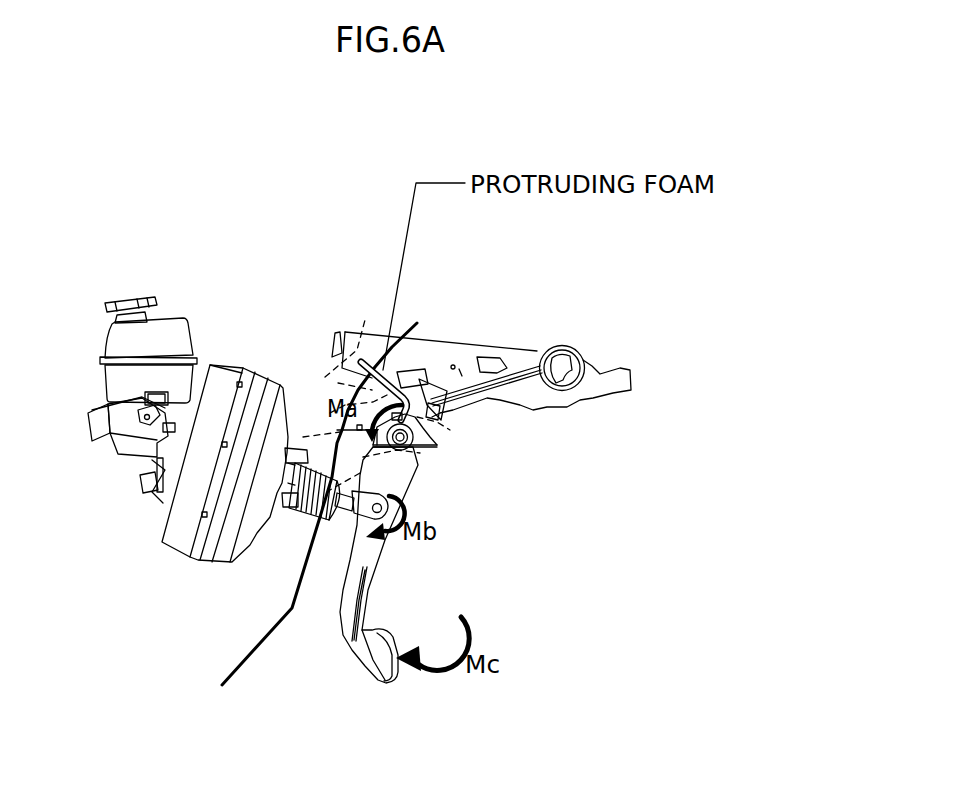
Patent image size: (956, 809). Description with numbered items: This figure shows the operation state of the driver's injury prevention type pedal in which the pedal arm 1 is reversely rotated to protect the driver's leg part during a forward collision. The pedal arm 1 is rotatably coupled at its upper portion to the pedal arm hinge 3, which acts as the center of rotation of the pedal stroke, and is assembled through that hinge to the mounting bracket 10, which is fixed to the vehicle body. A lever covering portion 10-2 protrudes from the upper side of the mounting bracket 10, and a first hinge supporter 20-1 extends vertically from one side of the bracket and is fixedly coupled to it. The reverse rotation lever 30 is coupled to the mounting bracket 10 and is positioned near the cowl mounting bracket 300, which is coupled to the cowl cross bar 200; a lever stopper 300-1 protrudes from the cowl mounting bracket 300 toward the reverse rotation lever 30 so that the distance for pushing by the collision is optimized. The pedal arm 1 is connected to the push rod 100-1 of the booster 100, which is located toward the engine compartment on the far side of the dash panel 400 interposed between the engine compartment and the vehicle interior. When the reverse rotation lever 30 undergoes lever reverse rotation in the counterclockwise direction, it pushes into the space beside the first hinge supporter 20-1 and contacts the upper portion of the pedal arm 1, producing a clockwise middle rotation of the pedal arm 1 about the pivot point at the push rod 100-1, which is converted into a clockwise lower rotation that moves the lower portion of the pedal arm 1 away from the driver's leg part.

The pedal arm 1 is at (357, 605).
The pedal arm hinge 3 is at (434, 437).
The mounting bracket 10 is at (320, 430).
The lever covering portion 10-2 is at (332, 342).
The first hinge supporter 20-1 is at (437, 447).
The reverse rotation lever 30 is at (570, 408).
The booster 100 is at (188, 493).
The push rod 100-1 is at (360, 490).
The cowl cross bar 200 is at (565, 347).
The cowl mounting bracket 300 is at (358, 345).
The lever stopper 300-1 is at (417, 365).
The dash panel 400 is at (258, 648).